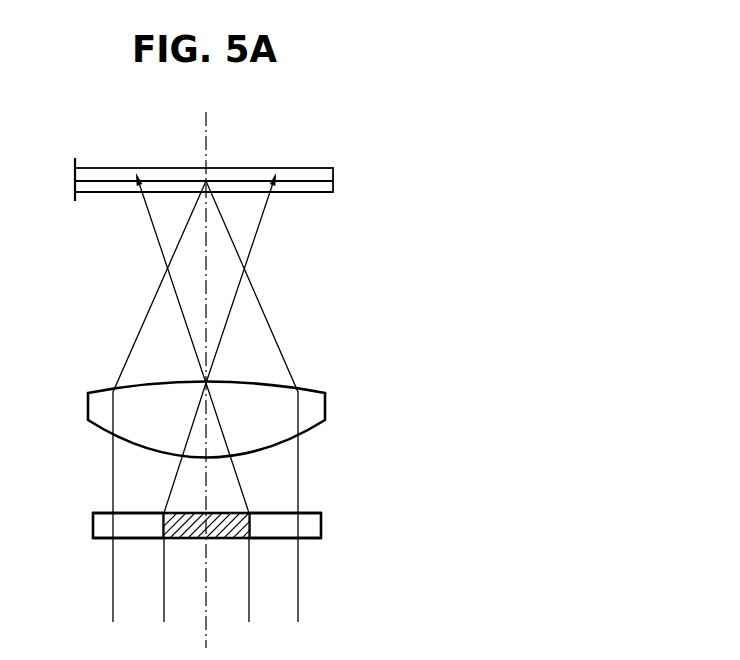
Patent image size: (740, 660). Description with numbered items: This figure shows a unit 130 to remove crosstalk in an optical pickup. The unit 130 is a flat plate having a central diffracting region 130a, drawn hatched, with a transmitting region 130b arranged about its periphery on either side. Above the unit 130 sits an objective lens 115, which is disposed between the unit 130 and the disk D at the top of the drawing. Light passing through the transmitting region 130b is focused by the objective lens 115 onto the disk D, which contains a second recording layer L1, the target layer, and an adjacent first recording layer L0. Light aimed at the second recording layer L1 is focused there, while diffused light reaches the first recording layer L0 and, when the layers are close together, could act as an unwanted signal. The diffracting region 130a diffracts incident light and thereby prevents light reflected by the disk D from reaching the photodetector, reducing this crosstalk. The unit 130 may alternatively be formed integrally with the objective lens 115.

The disk D is at (235, 149).
The second recording layer L1 is at (333, 175).
The first recording layer L0 is at (327, 192).
The objective lens 115 is at (325, 405).
The unit to remove crosstalk 130 is at (265, 558).
The diffracting region 130a is at (223, 536).
The transmitting region 130b is at (312, 537).